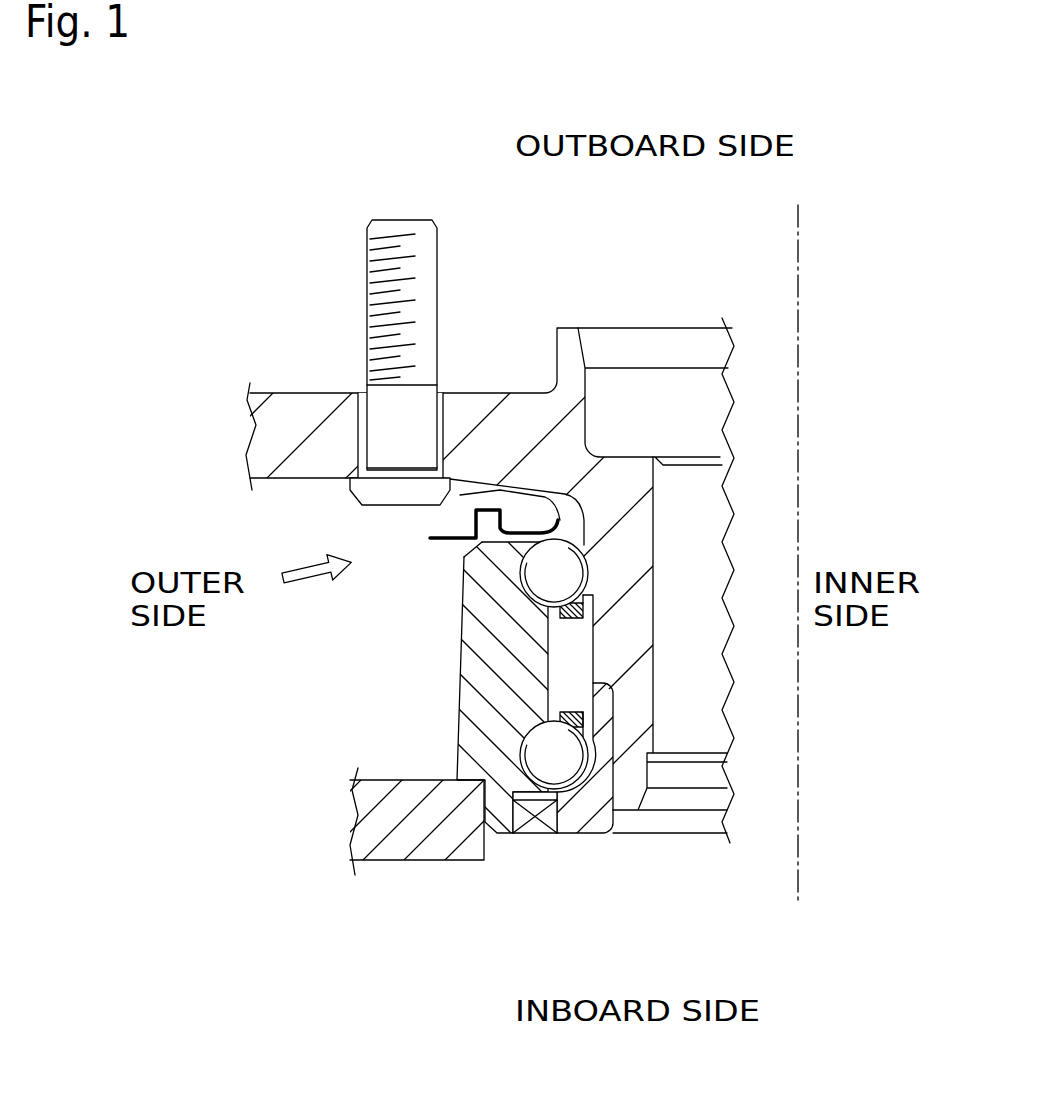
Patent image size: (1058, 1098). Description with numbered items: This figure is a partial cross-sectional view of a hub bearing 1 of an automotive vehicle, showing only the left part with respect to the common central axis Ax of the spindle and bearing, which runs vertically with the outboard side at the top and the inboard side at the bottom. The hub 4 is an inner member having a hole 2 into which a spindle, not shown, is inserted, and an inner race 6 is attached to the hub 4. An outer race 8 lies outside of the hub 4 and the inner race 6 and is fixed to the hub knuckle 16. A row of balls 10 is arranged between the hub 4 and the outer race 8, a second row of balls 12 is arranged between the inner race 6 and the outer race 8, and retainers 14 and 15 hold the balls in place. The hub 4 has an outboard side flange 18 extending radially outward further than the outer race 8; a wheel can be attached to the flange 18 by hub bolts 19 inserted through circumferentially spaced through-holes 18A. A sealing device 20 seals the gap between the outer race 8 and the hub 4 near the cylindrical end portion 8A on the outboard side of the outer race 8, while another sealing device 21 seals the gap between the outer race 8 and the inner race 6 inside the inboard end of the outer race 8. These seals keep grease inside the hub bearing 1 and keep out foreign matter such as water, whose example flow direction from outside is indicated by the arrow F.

The hub bearing 1 is at (652, 284).
The hole 2 is at (657, 602).
The hub 4 is at (640, 640).
The inner race 6 is at (577, 815).
The outer race 8 is at (481, 632).
The cylindrical end portion 8A is at (456, 545).
The balls 10 is at (538, 590).
The balls 12 is at (535, 750).
The retainer 14 is at (560, 607).
The retainer 15 is at (562, 712).
The hub knuckle 16 is at (420, 860).
The outboard side flange 18 is at (452, 400).
The through-hole 18A is at (363, 421).
The hub bolt 19 is at (367, 318).
The sealing device 20 is at (437, 512).
The sealing device 21 is at (530, 825).
The central axis Ax is at (800, 740).
The arrow F is at (316, 560).